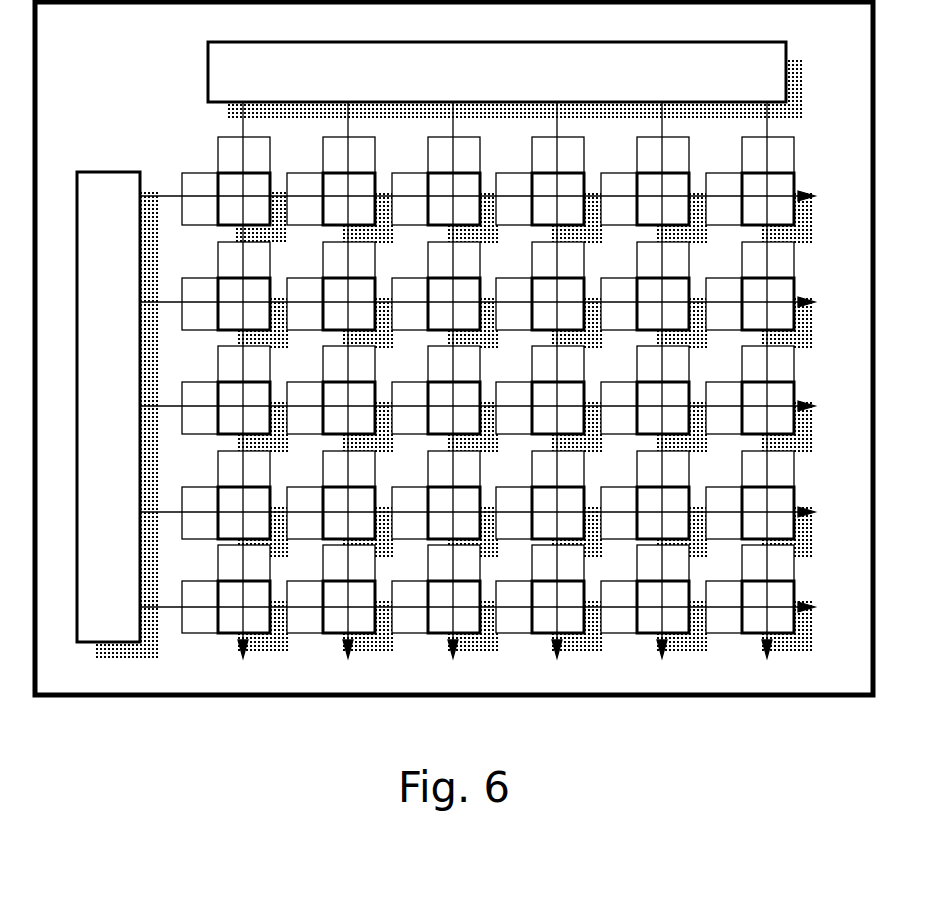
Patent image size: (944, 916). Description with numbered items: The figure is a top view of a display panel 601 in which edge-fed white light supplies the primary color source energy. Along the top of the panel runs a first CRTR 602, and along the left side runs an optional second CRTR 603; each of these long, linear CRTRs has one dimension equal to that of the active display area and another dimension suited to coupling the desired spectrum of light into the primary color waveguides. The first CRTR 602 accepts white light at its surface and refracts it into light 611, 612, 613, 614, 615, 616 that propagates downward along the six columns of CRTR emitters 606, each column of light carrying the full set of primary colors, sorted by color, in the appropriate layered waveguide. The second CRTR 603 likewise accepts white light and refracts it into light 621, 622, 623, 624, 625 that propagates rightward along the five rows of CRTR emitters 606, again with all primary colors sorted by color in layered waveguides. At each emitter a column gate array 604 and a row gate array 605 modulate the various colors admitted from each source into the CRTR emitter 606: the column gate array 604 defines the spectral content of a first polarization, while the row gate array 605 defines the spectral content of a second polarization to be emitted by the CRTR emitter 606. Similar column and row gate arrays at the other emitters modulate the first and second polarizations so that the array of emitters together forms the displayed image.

The display panel 601 is at (454, 372).
The first CRTR 602 is at (506, 81).
The second CRTR 603 is at (117, 416).
The column gate array 604 is at (235, 148).
The row gate array 605 is at (197, 190).
The CRTR emitter 606 is at (244, 199).
The column light 611 is at (243, 396).
The column light 612 is at (348, 396).
The column light 613 is at (453, 396).
The column light 614 is at (557, 396).
The column light 615 is at (662, 396).
The column light 616 is at (767, 396).
The row light 621 is at (498, 196).
The row light 622 is at (498, 302).
The row light 623 is at (498, 406).
The row light 624 is at (498, 512).
The row light 625 is at (498, 607).